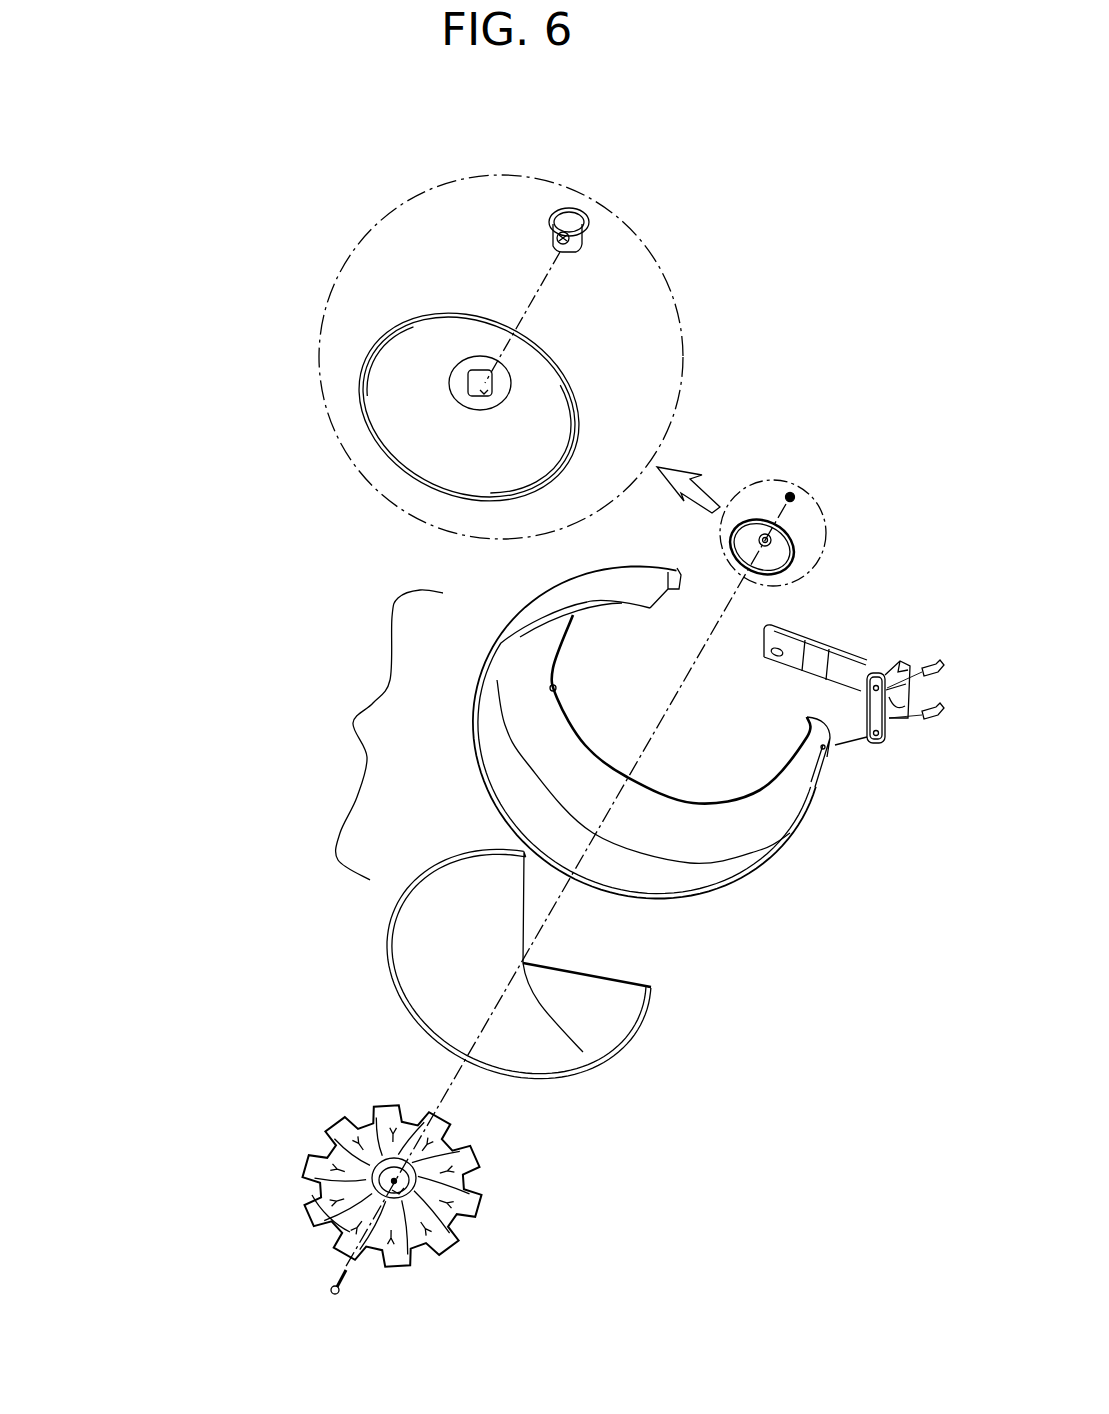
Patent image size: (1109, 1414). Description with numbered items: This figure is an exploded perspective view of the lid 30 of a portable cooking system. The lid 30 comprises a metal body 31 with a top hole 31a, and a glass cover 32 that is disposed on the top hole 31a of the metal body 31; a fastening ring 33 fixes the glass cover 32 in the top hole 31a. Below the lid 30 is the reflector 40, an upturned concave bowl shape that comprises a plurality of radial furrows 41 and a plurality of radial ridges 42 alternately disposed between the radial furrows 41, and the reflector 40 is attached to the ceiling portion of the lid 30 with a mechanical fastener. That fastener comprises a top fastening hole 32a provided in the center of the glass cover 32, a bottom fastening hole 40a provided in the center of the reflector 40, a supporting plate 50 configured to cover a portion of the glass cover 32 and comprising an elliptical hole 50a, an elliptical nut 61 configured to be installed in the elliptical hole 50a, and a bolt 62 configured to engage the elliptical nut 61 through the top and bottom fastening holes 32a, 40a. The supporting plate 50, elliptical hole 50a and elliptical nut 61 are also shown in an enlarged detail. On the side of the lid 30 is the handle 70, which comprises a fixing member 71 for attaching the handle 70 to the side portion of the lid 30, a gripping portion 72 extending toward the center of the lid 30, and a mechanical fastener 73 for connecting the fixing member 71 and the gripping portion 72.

The lid 30 is at (383, 735).
The metal body 31 is at (523, 705).
The top hole 31a is at (552, 686).
The glass cover 32 is at (618, 1012).
The top fastening hole 32a is at (583, 1052).
The fastening ring 33 is at (654, 988).
The reflector 40 is at (423, 1198).
The bottom fastening hole 40a is at (417, 1187).
The radial furrows 41 is at (330, 1218).
The radial ridges 42 is at (450, 1247).
The supporting plate 50 is at (357, 418).
The elliptical hole 50a is at (456, 385).
The elliptical nut 61 is at (586, 236).
The bolt 62 is at (342, 1291).
The handle 70 is at (860, 680).
The fixing member 71 is at (899, 702).
The gripping portion 72 is at (901, 660).
The mechanical fastener 73 is at (873, 677).